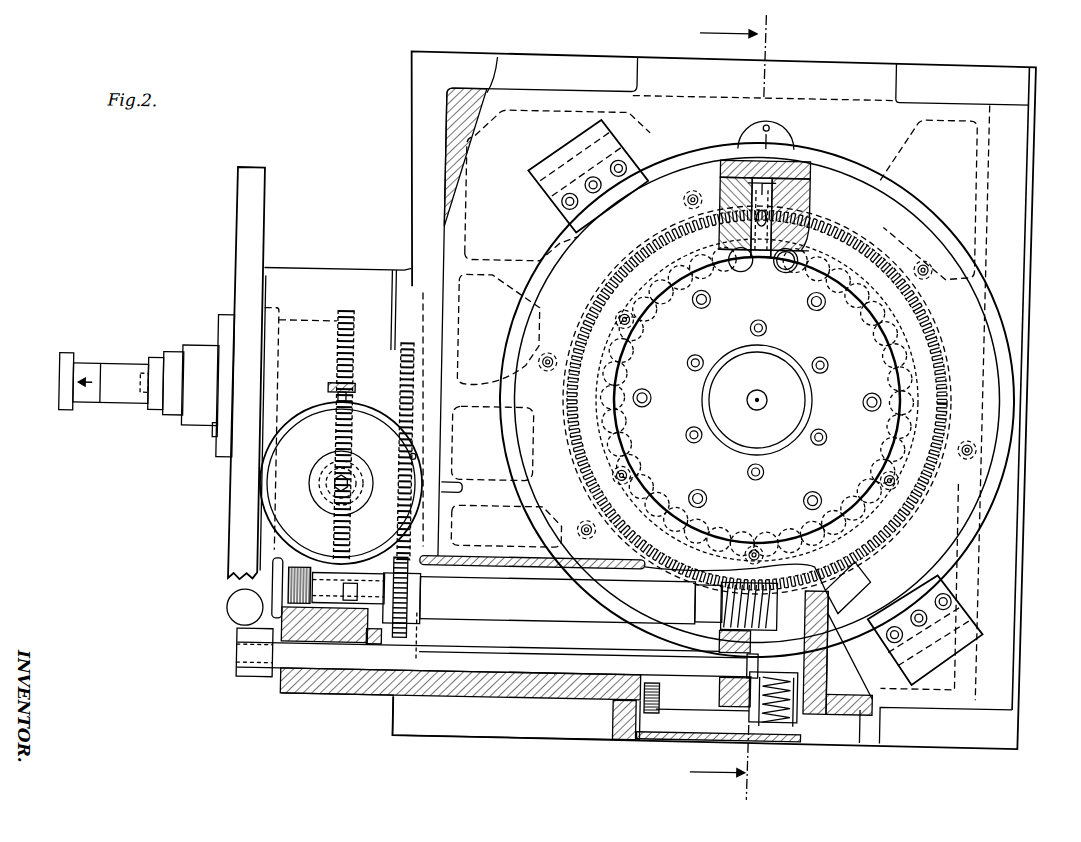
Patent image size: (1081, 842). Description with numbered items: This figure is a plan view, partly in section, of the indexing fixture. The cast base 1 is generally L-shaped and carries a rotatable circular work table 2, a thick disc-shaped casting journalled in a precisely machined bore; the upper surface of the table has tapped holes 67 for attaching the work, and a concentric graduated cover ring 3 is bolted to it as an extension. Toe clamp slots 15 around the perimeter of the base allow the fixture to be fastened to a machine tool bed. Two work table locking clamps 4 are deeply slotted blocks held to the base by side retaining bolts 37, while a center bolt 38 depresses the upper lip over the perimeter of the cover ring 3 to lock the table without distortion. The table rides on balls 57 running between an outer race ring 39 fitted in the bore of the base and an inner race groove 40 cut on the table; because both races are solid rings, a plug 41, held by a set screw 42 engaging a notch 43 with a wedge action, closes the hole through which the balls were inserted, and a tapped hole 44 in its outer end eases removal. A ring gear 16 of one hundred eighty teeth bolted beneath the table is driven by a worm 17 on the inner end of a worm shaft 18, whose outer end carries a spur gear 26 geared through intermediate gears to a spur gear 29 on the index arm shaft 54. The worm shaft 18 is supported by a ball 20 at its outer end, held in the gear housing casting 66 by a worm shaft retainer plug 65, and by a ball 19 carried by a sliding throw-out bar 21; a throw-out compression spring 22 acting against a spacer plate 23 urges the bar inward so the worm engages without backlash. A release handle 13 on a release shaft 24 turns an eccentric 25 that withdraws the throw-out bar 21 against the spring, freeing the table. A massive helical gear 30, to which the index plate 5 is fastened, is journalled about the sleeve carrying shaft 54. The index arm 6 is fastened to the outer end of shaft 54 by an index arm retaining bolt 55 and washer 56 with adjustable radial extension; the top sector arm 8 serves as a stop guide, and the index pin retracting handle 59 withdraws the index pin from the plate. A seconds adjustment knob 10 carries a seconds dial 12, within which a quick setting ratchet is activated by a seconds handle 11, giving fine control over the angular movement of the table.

The cast base 1 is at (643, 62).
The work table 2 is at (756, 399).
The graduated cover ring 3 is at (757, 400).
The work table locking clamps 4 is at (556, 164).
The index plate 5 is at (242, 240).
The index arm 6 is at (168, 451).
The top sector arm 8 is at (230, 398).
The seconds adjustment knob 10 is at (327, 461).
The seconds handle 11 is at (459, 488).
The seconds dial 12 is at (314, 412).
The release handle 13 is at (255, 677).
The toe clamp slots 15 is at (420, 111).
The ring gear 16 is at (829, 606).
The worm 17 is at (730, 626).
The worm shaft 18 is at (572, 618).
The ball 19 is at (754, 643).
The outer end support ball 20 is at (374, 615).
The throw-out bar 21 is at (793, 674).
The throw-out compression spring 22 is at (775, 733).
The spacer plate 23 is at (692, 741).
The release shaft 24 is at (678, 674).
The eccentric 25 is at (763, 663).
The spur gear 26 is at (417, 634).
The spur gear 29 is at (409, 347).
The helical gear 30 is at (346, 318).
The side retaining bolts 37 is at (624, 182).
The center bolt 38 is at (592, 194).
The outer race ring 39 is at (794, 244).
The inner race groove 40 is at (797, 268).
The plug 41 is at (803, 228).
The set screw 42 is at (801, 200).
The notch 43 is at (737, 249).
The tapped hole 44 is at (753, 187).
The index arm shaft 54 is at (399, 360).
The index arm retaining bolt 55 is at (414, 463).
The washer 56 is at (156, 364).
The balls 57 is at (755, 273).
The index pin retracting handle 59 is at (63, 403).
The worm shaft retainer plug 65 is at (270, 575).
The gear housing casting 66 is at (372, 275).
The tapped holes 67 is at (693, 369).